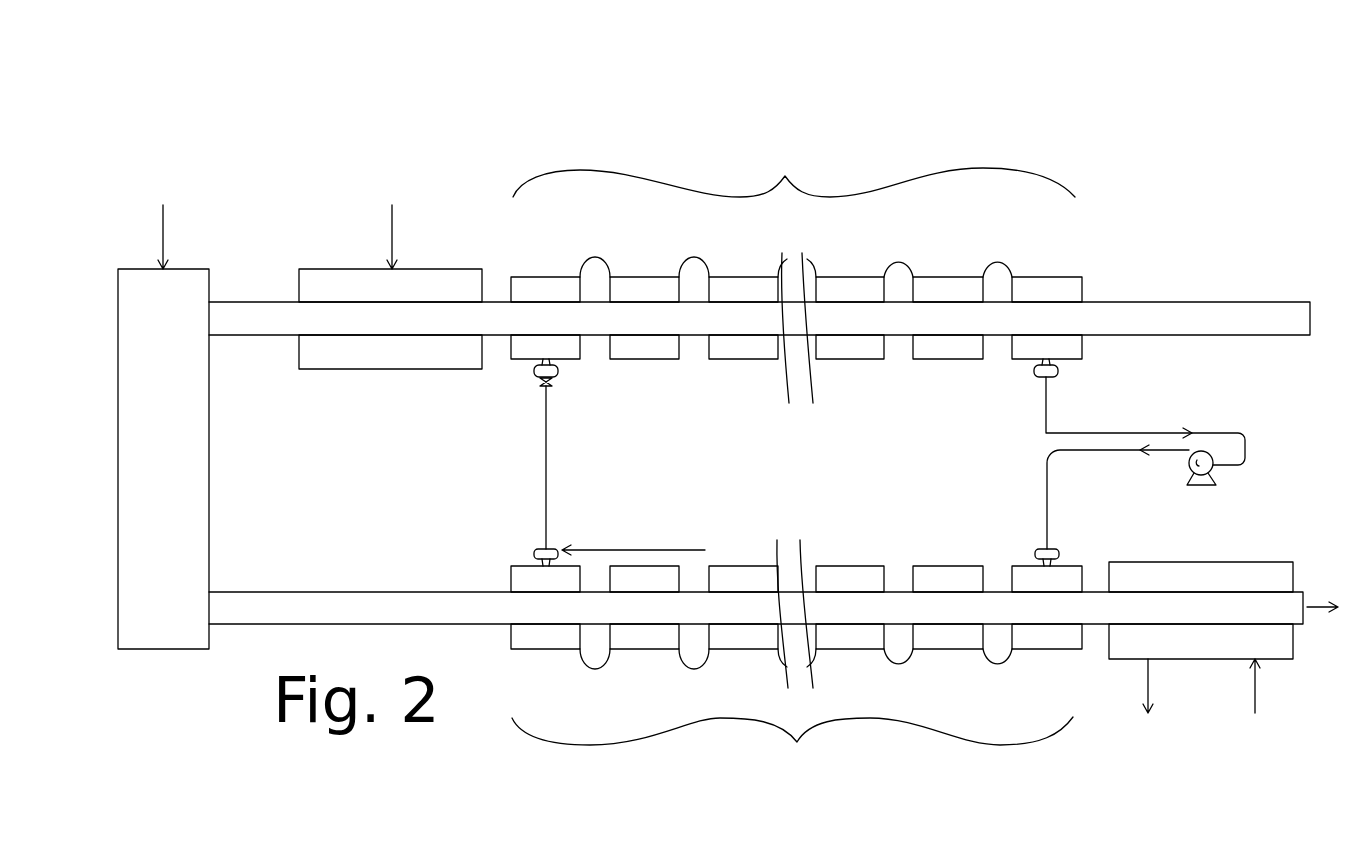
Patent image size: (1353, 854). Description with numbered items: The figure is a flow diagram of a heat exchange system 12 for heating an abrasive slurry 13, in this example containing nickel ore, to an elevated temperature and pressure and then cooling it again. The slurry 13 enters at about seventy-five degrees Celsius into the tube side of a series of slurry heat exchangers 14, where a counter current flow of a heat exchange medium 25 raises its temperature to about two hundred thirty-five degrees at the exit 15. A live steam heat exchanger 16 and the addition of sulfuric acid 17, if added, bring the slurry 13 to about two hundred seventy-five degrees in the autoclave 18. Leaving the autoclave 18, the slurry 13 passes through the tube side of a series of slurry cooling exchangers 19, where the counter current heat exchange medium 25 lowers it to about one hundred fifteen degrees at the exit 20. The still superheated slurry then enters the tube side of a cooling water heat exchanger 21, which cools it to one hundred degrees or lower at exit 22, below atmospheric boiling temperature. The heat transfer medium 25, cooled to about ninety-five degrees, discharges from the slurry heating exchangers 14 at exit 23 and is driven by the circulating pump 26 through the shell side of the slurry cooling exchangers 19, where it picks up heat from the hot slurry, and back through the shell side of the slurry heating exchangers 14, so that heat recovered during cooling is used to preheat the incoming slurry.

The heat exchange system 12 is at (1276, 88).
The slurry 13 is at (1326, 322).
The slurry heat exchangers 14 is at (785, 176).
The exit 15 is at (490, 247).
The live steam heat exchanger 16 is at (432, 269).
The sulfuric acid 17 is at (165, 233).
The autoclave 18 is at (209, 498).
The slurry cooling exchangers 19 is at (797, 742).
The exit 20 is at (1092, 591).
The cooling water heat exchanger 21 is at (1278, 660).
The exit 22 is at (1318, 600).
The exit 23 is at (1047, 416).
The heat exchange medium 25 is at (609, 257).
The circulating pump 26 is at (1208, 432).